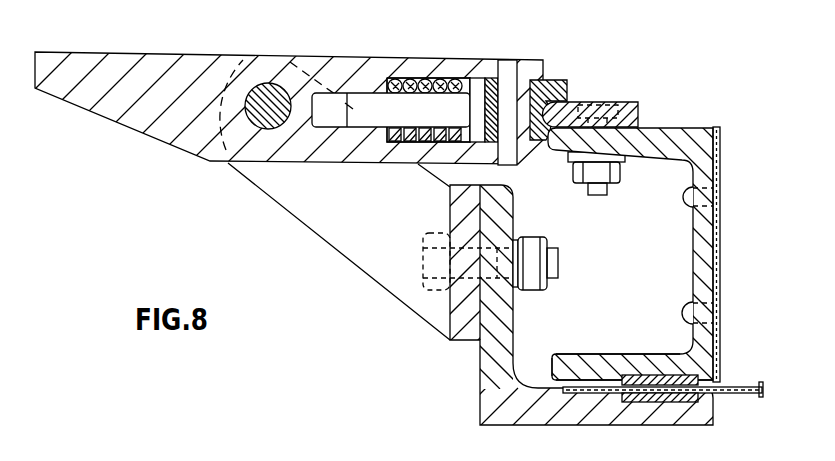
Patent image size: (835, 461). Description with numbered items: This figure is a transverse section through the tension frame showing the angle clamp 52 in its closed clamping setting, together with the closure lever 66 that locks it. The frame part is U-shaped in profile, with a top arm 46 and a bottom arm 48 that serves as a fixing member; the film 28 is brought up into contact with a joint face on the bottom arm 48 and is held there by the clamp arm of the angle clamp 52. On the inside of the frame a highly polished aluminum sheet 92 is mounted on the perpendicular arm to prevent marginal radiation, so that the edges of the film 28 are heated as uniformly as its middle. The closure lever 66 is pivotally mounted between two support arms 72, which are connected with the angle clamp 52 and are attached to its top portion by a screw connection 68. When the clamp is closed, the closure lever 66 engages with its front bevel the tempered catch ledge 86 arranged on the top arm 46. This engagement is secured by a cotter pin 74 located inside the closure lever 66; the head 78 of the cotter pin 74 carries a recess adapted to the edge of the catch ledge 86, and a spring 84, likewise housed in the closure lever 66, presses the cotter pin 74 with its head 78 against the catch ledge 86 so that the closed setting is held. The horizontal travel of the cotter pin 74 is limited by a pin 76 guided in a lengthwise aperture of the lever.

The film 28 is at (734, 386).
The top arm 46 is at (660, 160).
The bottom arm 48 is at (592, 354).
The angle clamp 52 is at (465, 401).
The closure lever 66 is at (138, 133).
The screw connection 68 is at (423, 265).
The support arm 72 is at (280, 184).
The cotter pin 74 is at (347, 95).
The pin 76 is at (505, 60).
The head 78 is at (555, 80).
The spring 84 is at (412, 78).
The catch ledge 86 is at (641, 111).
The aluminum sheet 92 is at (718, 262).